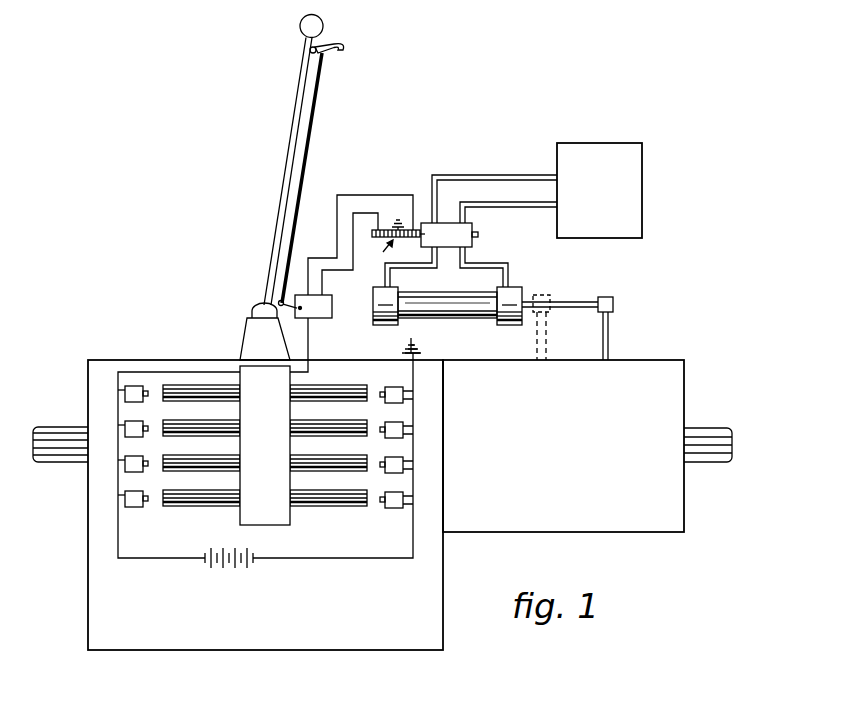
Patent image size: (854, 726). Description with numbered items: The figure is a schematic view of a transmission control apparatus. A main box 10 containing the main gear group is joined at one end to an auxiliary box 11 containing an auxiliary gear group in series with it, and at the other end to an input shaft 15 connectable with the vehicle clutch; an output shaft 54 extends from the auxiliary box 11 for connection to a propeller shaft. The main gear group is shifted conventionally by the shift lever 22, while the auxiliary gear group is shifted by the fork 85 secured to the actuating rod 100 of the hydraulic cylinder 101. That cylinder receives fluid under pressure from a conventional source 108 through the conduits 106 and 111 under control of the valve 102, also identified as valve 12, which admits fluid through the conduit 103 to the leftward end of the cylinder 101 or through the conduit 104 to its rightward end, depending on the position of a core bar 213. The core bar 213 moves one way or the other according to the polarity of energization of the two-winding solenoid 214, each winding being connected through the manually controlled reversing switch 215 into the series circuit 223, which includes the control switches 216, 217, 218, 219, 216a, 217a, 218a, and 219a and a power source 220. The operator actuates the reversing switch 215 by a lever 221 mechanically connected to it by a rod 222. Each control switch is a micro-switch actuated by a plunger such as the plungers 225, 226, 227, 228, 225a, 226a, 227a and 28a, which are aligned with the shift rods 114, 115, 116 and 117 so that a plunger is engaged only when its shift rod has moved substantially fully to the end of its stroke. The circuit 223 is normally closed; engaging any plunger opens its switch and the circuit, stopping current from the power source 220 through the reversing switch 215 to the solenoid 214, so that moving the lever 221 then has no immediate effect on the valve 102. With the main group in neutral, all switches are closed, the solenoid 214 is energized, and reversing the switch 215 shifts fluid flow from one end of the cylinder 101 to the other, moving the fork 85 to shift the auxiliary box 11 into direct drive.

The main box 10 is at (310, 633).
The auxiliary box 11 is at (606, 507).
The valve 12 is at (616, 292).
The input shaft 15 is at (38, 456).
The shift lever 22 is at (280, 222).
The output shaft 54 is at (711, 428).
The fork 85 is at (609, 336).
The actuating rod 100 is at (573, 302).
The hydraulic cylinder 101 is at (446, 314).
The valve 102 is at (425, 225).
The conduit 103 is at (412, 265).
The conduit 104 is at (510, 266).
The conduit 106 is at (493, 175).
The source 108 is at (633, 189).
The conduit 111 is at (498, 204).
The shift rod 114 is at (243, 395).
The shift rod 115 is at (243, 431).
The shift rod 116 is at (243, 466).
The shift rod 117 is at (243, 501).
The core bar 213 is at (383, 229).
The solenoid 214 is at (360, 245).
The reversing switch 215 is at (326, 313).
The control switch 216 is at (420, 396).
The control switch 217 is at (420, 431).
The control switch 218 is at (420, 466).
The control switch 219 is at (420, 501).
The control switch 216a is at (125, 393).
The control switch 217a is at (128, 428).
The control switch 218a is at (125, 462).
The control switch 219a is at (125, 497).
The power source 220 is at (219, 581).
The lever 221 is at (343, 47).
The rod 222 is at (316, 114).
The series circuit 223 is at (385, 562).
The plunger 225 is at (381, 396).
The plunger 226 is at (381, 431).
The plunger 227 is at (381, 466).
The plunger 228 is at (381, 501).
The plunger 225a is at (148, 396).
The plunger 226a is at (148, 431).
The plunger 227a is at (148, 466).
The solenoid coil 28a is at (148, 501).